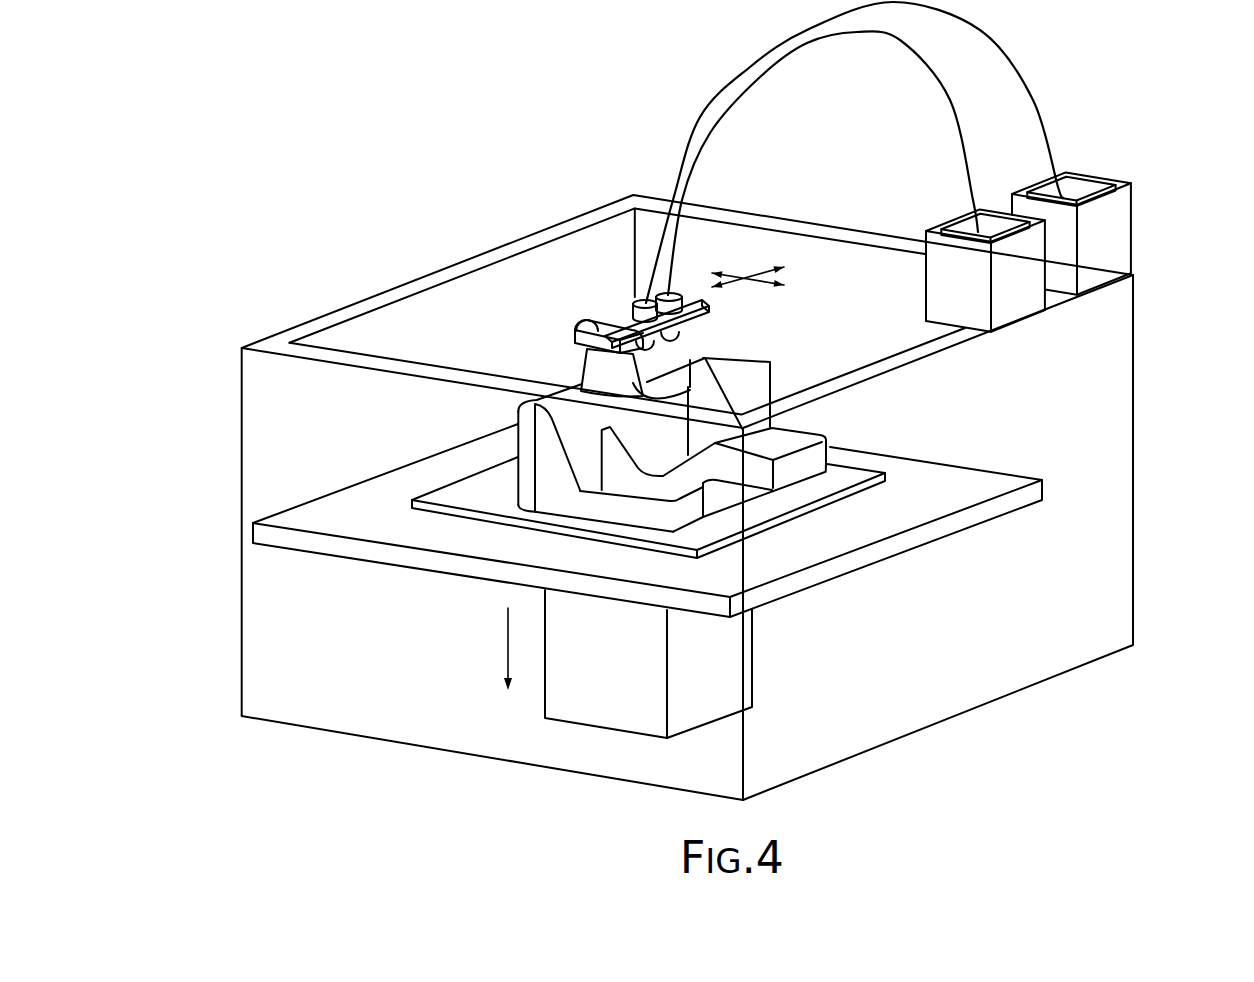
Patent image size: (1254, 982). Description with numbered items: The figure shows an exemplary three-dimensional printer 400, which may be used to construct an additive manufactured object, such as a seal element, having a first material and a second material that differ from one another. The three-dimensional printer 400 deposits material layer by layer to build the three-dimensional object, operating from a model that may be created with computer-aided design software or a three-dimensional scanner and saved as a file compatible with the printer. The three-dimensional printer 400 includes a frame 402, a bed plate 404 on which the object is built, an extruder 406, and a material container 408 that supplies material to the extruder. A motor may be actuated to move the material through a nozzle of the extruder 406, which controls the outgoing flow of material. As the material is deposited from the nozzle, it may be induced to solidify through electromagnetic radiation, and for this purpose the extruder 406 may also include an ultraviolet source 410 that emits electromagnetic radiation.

The 3D printer 400 is at (1040, 712).
The frame 402 is at (335, 730).
The bed plate 404 is at (285, 548).
The extruder 406 is at (650, 240).
The material container 408 is at (1130, 243).
The ultraviolet (UV) source 410 is at (580, 313).